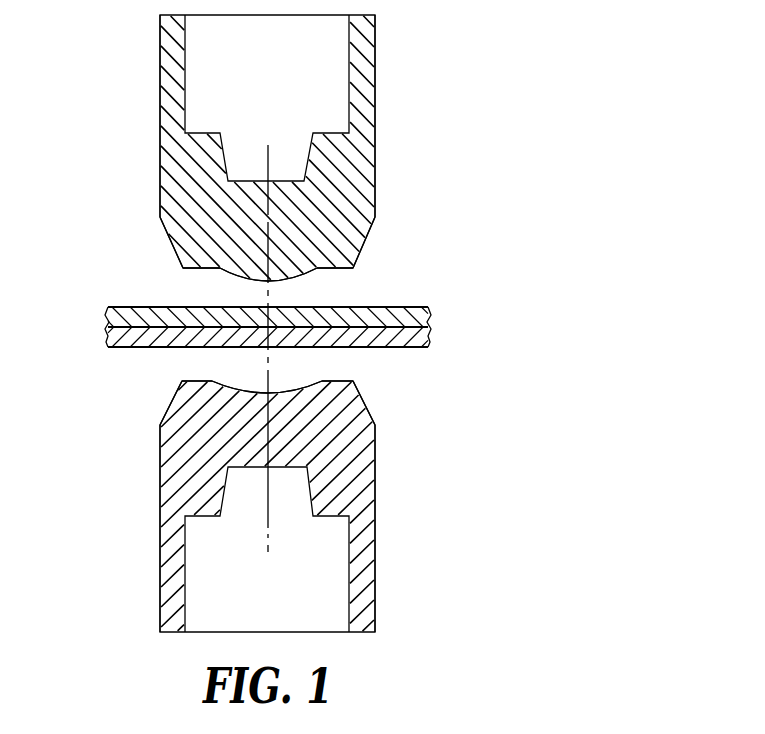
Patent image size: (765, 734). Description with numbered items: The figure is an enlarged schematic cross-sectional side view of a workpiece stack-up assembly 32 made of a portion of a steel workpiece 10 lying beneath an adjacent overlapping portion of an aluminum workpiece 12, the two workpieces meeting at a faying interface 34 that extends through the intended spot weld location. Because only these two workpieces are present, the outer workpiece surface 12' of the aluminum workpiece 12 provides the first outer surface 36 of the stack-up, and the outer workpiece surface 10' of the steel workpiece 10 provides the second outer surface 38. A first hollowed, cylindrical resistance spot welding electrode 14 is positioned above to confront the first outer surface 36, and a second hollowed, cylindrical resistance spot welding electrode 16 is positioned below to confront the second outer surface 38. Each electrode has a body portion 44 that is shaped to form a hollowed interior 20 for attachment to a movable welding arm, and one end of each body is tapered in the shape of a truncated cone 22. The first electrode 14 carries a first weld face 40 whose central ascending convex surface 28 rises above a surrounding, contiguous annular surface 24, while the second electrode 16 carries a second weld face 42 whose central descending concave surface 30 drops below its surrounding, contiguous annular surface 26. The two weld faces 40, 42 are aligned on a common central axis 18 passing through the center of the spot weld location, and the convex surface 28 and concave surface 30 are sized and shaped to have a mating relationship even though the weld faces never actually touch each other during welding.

The steel workpiece 10 is at (314, 344).
The outer workpiece surface of the steel workpiece 10' is at (302, 380).
The aluminum workpiece 12 is at (315, 313).
The outer workpiece surface of the aluminum workpiece 12' is at (309, 284).
The first resistance spot welding electrode 14 is at (393, 118).
The second resistance spot welding electrode 16 is at (393, 486).
The common central axis 18 is at (270, 530).
The hollowed interior 20 is at (254, 95).
The truncated cone 22 is at (368, 237).
The annular surface of the first welding electrode 24 is at (342, 268).
The annular surface of the second welding electrode 26 is at (348, 375).
The central ascending convex surface 28 is at (252, 281).
The central descending concave surface 30 is at (253, 390).
The workpiece stack-up assembly 32 is at (97, 328).
The faying interface 34 is at (129, 323).
The first outer surface 36 is at (130, 326).
The second outer surface 38 is at (138, 348).
The first weld face 40 is at (309, 279).
The second weld face 42 is at (288, 383).
The body portion 44 is at (377, 157).